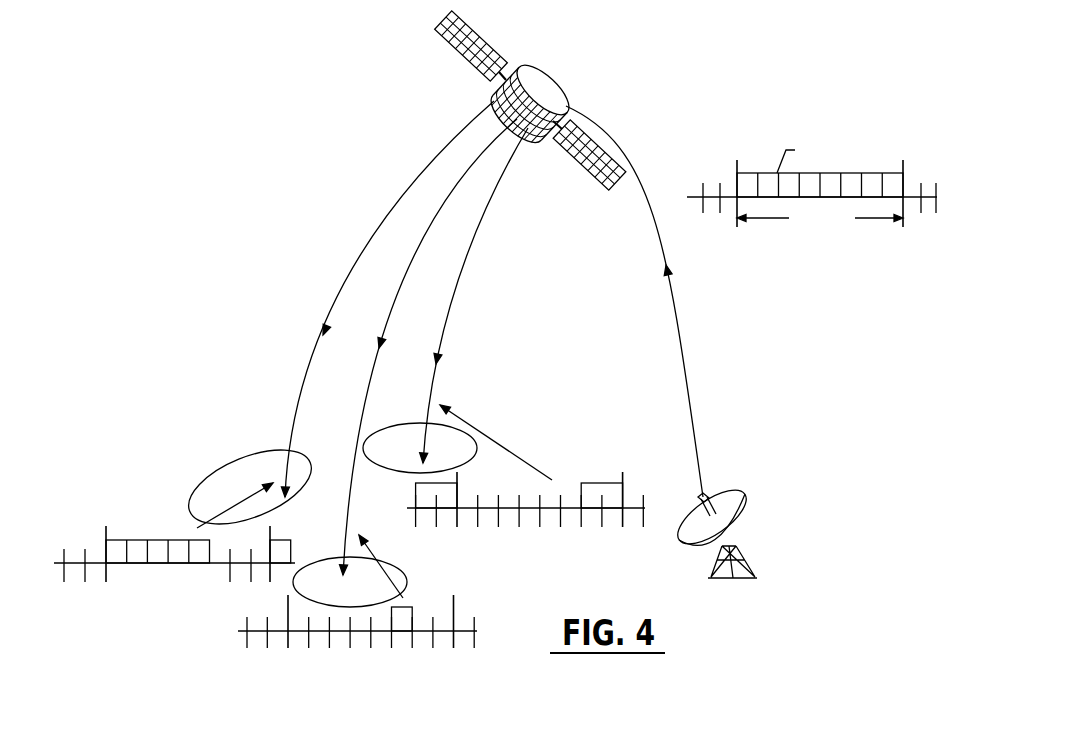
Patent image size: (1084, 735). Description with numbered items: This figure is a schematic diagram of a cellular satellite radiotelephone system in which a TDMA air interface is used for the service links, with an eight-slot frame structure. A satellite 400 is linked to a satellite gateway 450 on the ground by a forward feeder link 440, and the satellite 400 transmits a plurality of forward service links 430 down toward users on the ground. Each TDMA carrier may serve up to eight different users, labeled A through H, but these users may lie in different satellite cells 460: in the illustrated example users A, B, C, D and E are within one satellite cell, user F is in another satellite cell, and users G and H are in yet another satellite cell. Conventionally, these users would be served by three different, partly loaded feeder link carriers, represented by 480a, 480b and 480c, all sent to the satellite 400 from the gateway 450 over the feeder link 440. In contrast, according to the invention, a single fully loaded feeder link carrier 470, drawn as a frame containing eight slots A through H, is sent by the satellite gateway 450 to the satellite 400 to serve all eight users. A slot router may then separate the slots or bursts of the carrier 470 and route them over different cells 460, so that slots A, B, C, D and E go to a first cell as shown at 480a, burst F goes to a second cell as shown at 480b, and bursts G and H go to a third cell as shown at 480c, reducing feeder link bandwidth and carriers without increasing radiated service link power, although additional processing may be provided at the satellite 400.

The satellite 400 is at (519, 100).
The forward service links 430 is at (402, 338).
The forward feeder link 440 is at (653, 301).
The satellite gateway 450 is at (734, 524).
The satellite cells 460 is at (247, 484).
The fully loaded feeder link carrier 470 is at (805, 167).
The feeder link carrier for first cell 480a is at (174, 570).
The feeder link carrier for second cell 480b is at (346, 638).
The feeder link carrier for third cell 480c is at (526, 516).